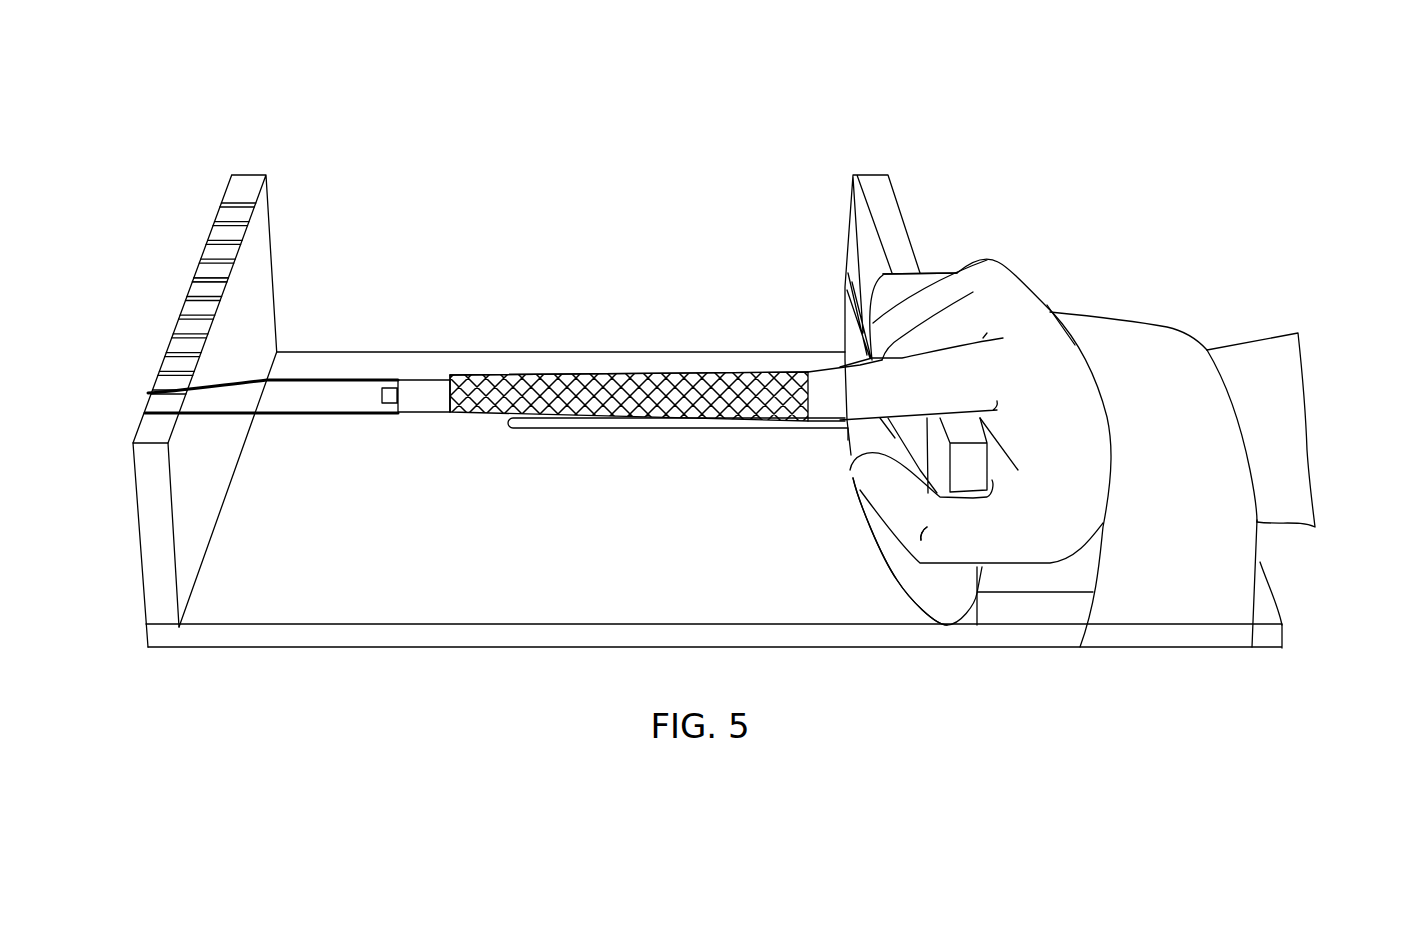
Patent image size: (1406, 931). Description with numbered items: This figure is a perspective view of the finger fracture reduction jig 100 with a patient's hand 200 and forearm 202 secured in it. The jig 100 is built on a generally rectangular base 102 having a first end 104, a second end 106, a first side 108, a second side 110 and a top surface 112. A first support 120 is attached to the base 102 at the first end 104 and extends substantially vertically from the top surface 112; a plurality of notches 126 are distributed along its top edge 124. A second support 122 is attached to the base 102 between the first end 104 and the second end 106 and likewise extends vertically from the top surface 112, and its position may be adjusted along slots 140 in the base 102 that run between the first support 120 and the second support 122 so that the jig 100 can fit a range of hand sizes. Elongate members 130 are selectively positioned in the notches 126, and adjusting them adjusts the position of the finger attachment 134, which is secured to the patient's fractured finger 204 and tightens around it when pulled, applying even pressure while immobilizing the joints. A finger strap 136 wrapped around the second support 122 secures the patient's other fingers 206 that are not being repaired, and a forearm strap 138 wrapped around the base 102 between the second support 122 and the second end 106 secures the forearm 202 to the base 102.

The finger fracture reduction jig 100 is at (232, 135).
The base 102 is at (528, 368).
The first end 104 is at (147, 637).
The second end 106 is at (1283, 627).
The first side 108 is at (568, 632).
The second side 110 is at (430, 350).
The top surface 112 is at (665, 368).
The first support 120 is at (272, 217).
The second support 122 is at (903, 213).
The top edge 124 is at (203, 283).
The notches 126 is at (192, 335).
The elongate members 130 is at (145, 413).
The finger attachment 134 is at (473, 398).
The finger strap 136 is at (898, 580).
The forearm strap 138 is at (1157, 387).
The slots 140 is at (707, 440).
The hand 200 is at (1070, 452).
The forearm 202 is at (1305, 367).
The fractured finger 204 is at (863, 387).
The fingers 206 is at (925, 545).